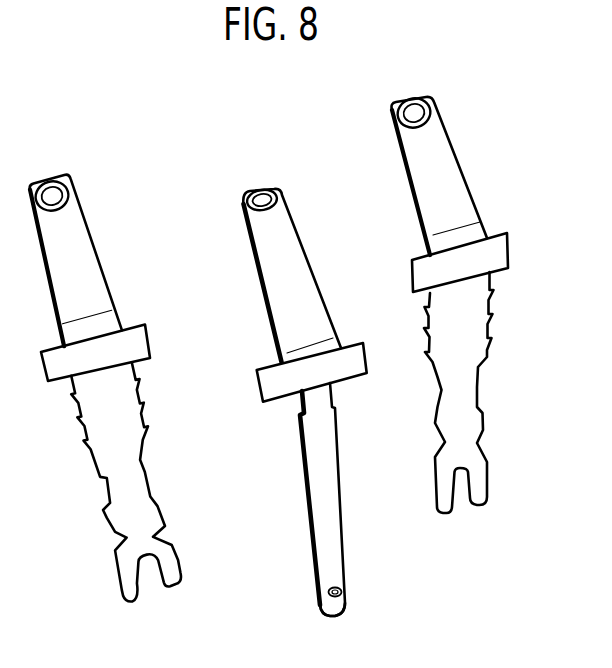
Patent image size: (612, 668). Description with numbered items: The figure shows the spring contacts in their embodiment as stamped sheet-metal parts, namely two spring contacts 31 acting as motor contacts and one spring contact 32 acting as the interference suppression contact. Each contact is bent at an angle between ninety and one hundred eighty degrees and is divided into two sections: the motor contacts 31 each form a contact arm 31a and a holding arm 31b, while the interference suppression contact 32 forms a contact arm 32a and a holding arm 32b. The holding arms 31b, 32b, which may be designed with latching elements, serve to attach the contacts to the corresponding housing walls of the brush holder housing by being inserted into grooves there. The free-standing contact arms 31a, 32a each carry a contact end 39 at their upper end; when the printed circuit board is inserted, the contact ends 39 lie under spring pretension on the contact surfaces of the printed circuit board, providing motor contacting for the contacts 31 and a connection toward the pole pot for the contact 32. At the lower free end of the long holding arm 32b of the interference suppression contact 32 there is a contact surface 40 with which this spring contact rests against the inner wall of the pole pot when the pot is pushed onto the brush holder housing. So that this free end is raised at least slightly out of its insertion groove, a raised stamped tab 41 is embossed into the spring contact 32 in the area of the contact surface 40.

The spring contact 31 is at (296, 351).
The contact arm 31a is at (97, 257).
The holding arm 31b is at (151, 453).
The spring contact 32 is at (327, 405).
The contact arm 32a is at (305, 243).
The holding arm 32b is at (327, 504).
The contact end 39 is at (50, 192).
The contact surface 40 is at (342, 598).
The raised stamped tab 41 is at (324, 602).